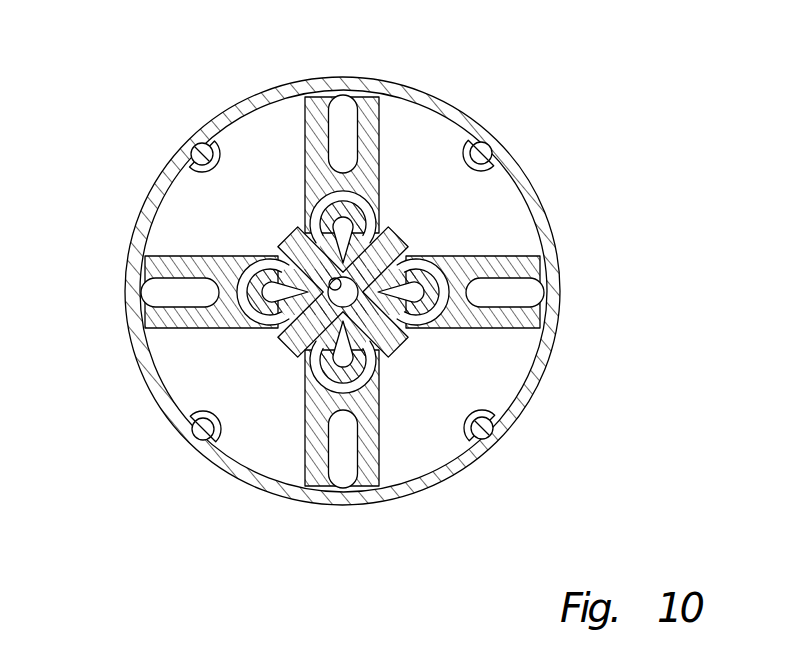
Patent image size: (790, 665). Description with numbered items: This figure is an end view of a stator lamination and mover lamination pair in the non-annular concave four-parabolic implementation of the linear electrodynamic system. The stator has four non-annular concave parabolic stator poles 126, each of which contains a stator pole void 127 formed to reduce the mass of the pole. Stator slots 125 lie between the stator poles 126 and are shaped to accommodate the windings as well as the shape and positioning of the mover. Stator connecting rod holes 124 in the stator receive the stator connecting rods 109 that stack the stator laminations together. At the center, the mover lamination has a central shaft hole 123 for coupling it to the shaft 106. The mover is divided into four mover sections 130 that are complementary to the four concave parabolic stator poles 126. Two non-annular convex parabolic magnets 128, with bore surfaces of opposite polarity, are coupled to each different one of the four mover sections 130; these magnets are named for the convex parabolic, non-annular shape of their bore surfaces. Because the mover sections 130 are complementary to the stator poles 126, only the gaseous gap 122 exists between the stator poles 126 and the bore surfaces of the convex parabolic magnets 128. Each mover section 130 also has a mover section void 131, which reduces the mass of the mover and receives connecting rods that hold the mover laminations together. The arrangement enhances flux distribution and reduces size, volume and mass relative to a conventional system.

The shaft 106 is at (372, 312).
The stator connecting rods 109 is at (543, 480).
The gaseous gap 122 is at (374, 186).
The central shaft hole 123 is at (295, 255).
The stator connecting rod holes 124 is at (354, 289).
The stator slots 125 is at (192, 196).
The non-annular concave parabolic stator poles 126 is at (367, 135).
The stator pole voids 127 is at (346, 100).
The non-annular convex parabolic magnets 128 is at (322, 240).
The mover sections 130 is at (292, 252).
The mover section voids 131 is at (437, 248).